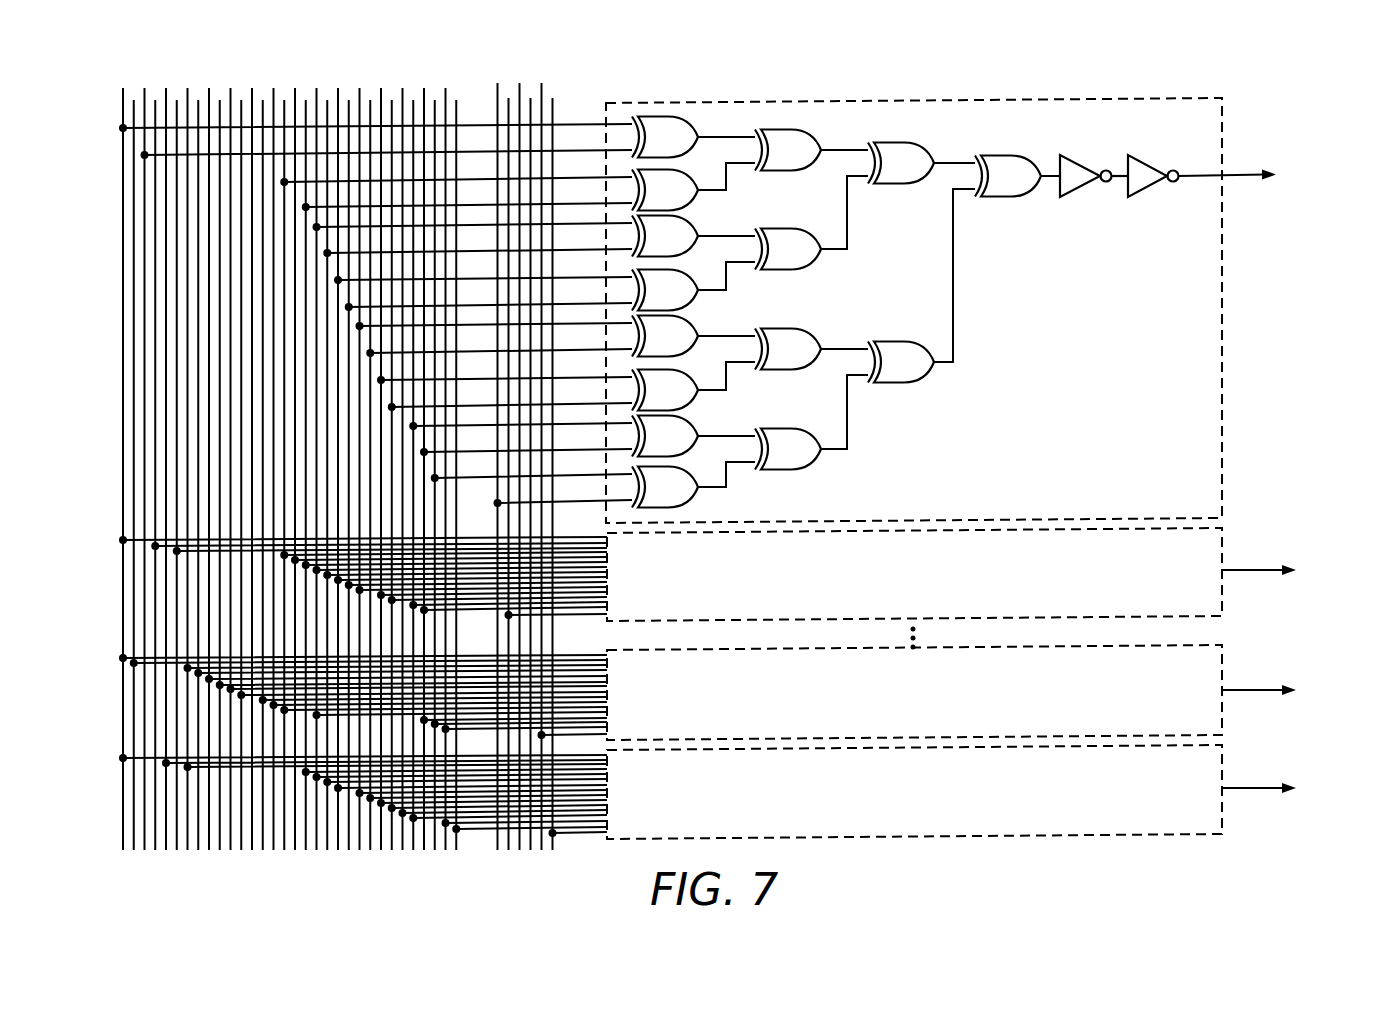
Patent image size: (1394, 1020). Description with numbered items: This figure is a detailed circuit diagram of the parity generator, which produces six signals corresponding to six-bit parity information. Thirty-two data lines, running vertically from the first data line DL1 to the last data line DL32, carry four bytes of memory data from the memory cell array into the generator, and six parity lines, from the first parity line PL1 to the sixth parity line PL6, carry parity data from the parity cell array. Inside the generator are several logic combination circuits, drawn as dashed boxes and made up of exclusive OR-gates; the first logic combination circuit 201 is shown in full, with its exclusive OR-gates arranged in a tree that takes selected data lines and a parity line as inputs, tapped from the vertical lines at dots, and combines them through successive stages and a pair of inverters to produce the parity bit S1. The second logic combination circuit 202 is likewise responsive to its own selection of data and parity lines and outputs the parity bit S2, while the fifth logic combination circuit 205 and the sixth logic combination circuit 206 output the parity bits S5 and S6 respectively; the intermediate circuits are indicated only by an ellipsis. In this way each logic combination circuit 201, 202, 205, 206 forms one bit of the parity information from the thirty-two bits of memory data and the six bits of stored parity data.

The data line DL1 is at (122, 108).
The data line DL32 is at (455, 104).
The parity line PL1 is at (498, 100).
The parity line PL6 is at (570, 90).
The logic combination circuit 201 is at (1222, 318).
The logic combination circuit 202 is at (1222, 537).
The logic combination circuit 205 is at (1222, 656).
The logic combination circuit 206 is at (1222, 754).
The parity bit signal S1 is at (1246, 175).
The parity bit signal S2 is at (1276, 570).
The parity bit signal S5 is at (1276, 690).
The parity bit signal S6 is at (1276, 788).